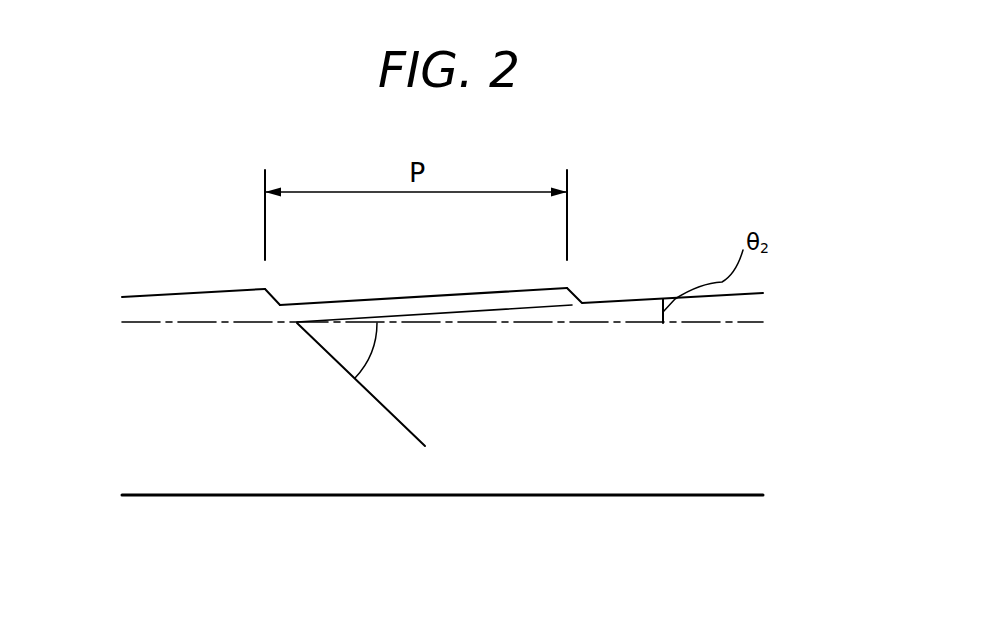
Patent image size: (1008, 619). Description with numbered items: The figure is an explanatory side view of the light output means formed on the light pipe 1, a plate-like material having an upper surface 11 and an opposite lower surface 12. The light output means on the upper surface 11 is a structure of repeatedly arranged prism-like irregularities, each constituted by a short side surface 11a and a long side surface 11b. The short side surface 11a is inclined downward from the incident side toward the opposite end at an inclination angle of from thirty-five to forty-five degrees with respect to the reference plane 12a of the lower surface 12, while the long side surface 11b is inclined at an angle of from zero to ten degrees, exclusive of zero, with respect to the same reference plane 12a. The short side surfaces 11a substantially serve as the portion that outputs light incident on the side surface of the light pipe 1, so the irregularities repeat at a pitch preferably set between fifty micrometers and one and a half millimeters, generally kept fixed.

The light pipe 1 is at (703, 430).
The upper surface 11 is at (598, 275).
The short side surface 11a is at (277, 294).
The long side surface 11b is at (425, 297).
The lower surface 12 is at (565, 495).
The reference plane 12a is at (513, 322).